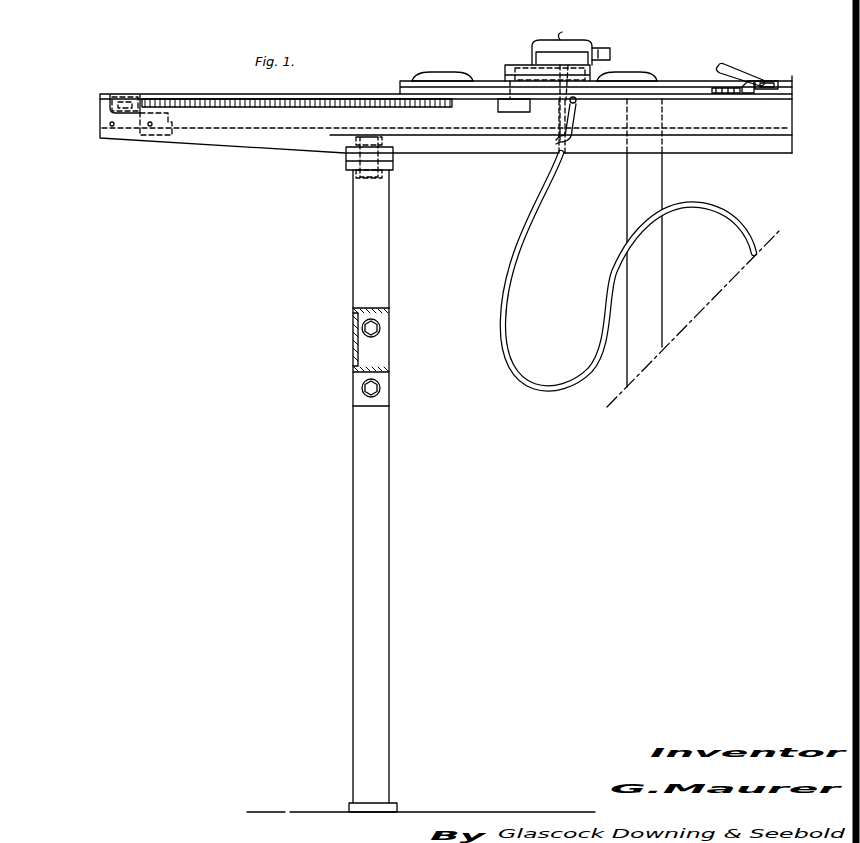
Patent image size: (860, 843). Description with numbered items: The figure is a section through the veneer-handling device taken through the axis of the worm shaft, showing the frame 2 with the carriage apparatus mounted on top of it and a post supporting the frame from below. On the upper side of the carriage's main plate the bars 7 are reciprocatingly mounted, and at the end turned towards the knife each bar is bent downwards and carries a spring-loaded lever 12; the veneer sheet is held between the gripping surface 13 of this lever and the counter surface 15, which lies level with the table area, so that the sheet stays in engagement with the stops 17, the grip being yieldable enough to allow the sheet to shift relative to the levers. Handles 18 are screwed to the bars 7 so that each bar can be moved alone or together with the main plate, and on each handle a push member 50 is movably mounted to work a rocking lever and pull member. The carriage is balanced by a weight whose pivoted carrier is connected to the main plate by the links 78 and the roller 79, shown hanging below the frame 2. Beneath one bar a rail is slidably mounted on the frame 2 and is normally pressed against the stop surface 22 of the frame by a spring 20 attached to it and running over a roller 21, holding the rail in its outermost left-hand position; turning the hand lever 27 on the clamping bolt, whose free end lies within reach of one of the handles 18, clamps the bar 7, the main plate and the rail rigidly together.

The frame 2 is at (237, 133).
The spring 20 is at (188, 104).
The stop surface 22 is at (112, 108).
The roller 21 is at (141, 113).
The bars 7 is at (664, 82).
The hand lever 27 is at (529, 74).
The handles 18 is at (558, 40).
The push member 50 is at (605, 48).
The roller 79 is at (636, 88).
The links 78 is at (632, 300).
The spring-loaded lever 12 is at (731, 68).
The gripping surface 13 is at (766, 81).
The stops 17 is at (757, 92).
The counter surface 15 is at (763, 96).